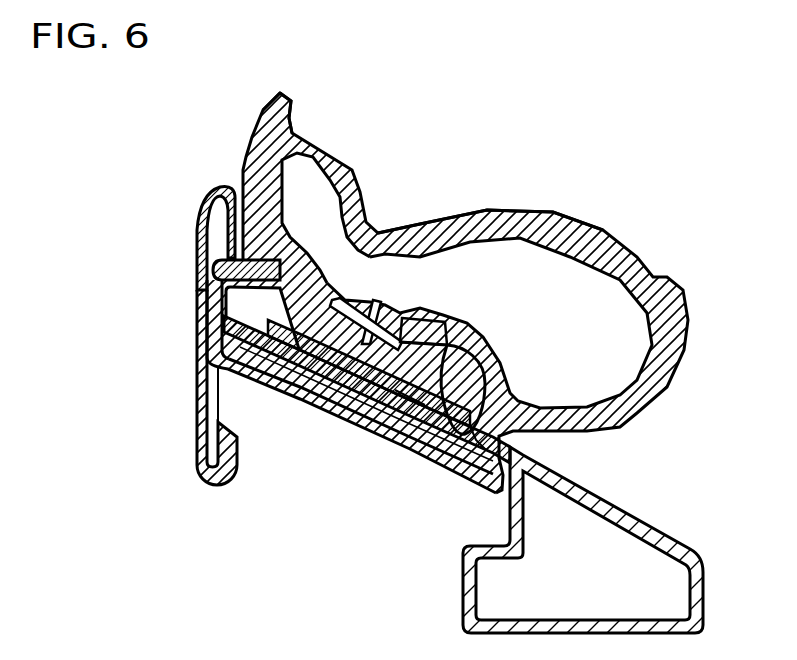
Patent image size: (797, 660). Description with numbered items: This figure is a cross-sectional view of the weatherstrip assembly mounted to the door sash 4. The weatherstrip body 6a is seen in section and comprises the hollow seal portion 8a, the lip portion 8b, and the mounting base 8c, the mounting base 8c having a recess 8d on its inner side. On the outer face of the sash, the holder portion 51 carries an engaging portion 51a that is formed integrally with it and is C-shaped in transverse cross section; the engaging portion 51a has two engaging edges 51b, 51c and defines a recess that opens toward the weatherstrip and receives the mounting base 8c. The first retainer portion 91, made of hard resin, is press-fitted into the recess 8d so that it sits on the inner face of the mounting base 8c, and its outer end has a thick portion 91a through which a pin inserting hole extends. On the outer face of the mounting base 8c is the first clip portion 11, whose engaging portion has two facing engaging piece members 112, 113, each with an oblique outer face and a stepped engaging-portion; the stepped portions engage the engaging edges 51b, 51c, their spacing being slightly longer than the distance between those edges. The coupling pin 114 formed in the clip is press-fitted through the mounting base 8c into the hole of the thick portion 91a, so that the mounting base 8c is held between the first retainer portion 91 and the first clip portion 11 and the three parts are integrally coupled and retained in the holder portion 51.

The door sash 4 is at (653, 523).
The weatherstrip body 6a is at (512, 200).
The hollow seal portion 8a is at (682, 328).
The lip portion 8b is at (264, 104).
The mounting base 8c is at (308, 390).
The recess 8d is at (323, 283).
The first clip portion 11 is at (343, 370).
The holder portion 51 is at (493, 437).
The engaging portion 51a is at (478, 437).
The engaging edge 51b is at (500, 348).
The engaging edge 51c is at (277, 262).
The first retainer portion 91 is at (407, 315).
The thick portion 91a is at (362, 305).
The engaging piece member 112 is at (413, 405).
The engaging piece member 113 is at (267, 303).
The coupling pin 114 is at (381, 262).